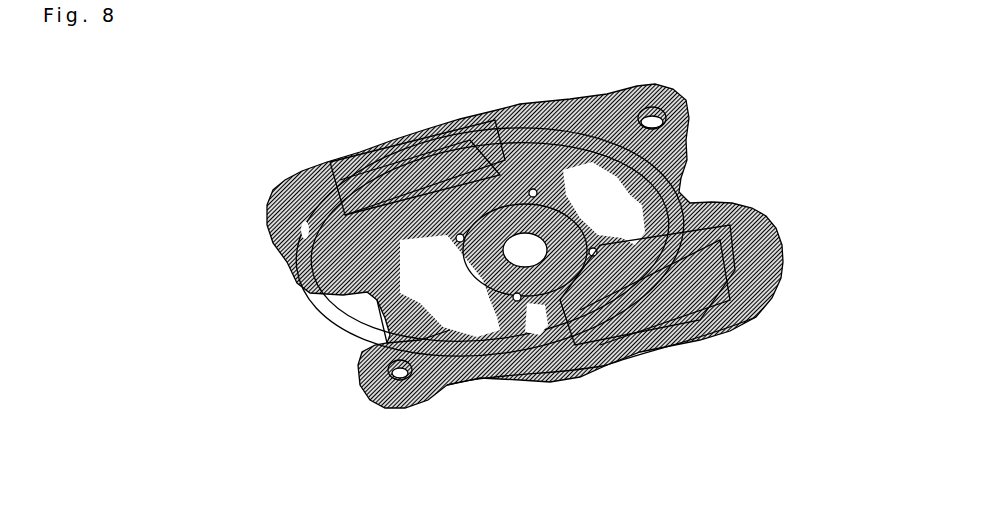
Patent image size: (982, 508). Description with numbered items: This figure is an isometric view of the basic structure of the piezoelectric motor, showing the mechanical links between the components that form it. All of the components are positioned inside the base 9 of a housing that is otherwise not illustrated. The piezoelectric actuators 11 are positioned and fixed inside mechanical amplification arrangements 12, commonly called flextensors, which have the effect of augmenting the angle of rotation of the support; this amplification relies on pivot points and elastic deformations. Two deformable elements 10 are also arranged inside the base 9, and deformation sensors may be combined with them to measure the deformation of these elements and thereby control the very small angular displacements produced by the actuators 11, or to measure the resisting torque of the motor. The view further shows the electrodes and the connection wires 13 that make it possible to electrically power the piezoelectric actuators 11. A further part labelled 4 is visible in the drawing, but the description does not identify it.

The carrier plate 4 is at (668, 163).
The base 9 is at (690, 103).
The deformable elements 10 is at (373, 310).
The piezoelectric actuator 11 is at (407, 137).
The mechanical amplification arrangements 12 is at (348, 156).
The connection wires 13 is at (612, 362).